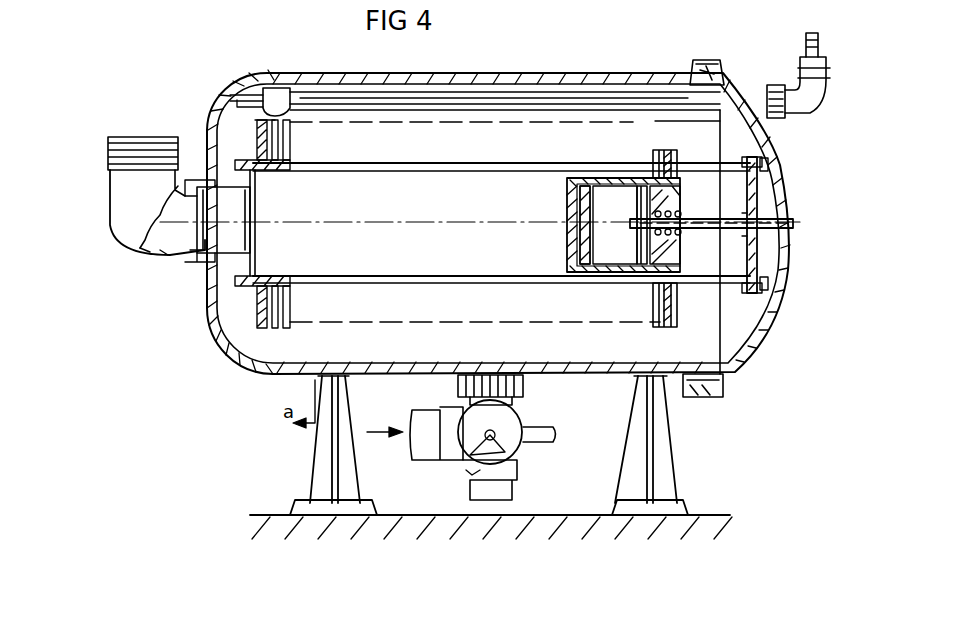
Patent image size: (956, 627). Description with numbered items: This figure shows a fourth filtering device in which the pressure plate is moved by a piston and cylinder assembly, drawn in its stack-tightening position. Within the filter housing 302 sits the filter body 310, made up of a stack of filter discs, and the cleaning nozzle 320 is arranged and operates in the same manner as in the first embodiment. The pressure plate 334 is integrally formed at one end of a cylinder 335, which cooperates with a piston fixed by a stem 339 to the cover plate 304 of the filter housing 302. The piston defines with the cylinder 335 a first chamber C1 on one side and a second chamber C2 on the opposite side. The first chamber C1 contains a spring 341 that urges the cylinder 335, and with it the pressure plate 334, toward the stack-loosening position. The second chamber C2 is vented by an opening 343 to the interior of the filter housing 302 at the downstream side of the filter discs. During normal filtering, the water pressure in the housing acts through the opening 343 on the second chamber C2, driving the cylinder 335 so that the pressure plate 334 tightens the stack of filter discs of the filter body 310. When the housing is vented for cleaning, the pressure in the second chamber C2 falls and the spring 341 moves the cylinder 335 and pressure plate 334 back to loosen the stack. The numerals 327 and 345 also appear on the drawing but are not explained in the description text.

The filter housing 302 is at (207, 140).
The cover plate 304 is at (740, 360).
The filter body 310 is at (612, 120).
The cleaning nozzle 320 is at (284, 92).
The drum 327 is at (655, 115).
The pressure plate 334 is at (672, 165).
The cylinder 335 is at (617, 275).
The stem 339 is at (772, 192).
The spring 341 is at (688, 262).
The opening 343 is at (572, 208).
The cylinder end wall 345 is at (572, 246).
The first chamber C1 is at (660, 203).
The second chamber C2 is at (615, 225).